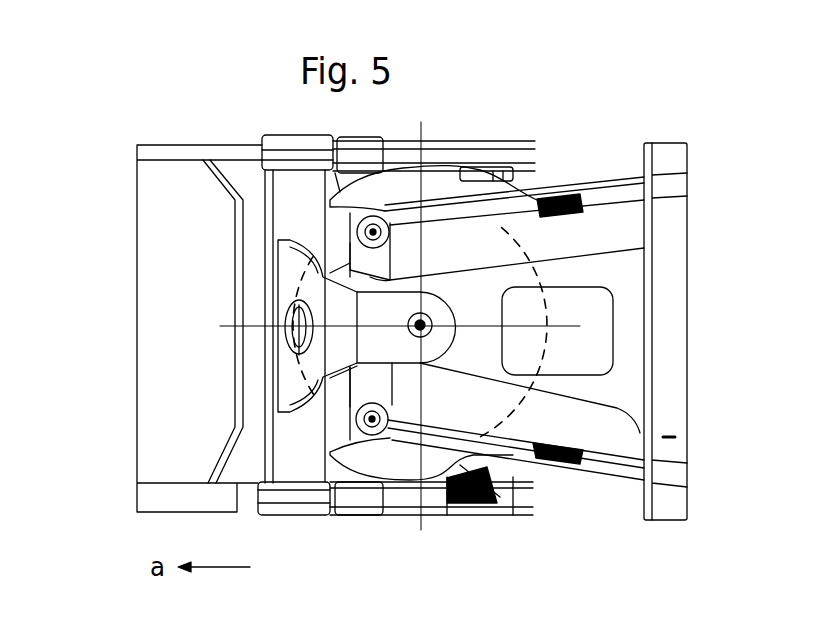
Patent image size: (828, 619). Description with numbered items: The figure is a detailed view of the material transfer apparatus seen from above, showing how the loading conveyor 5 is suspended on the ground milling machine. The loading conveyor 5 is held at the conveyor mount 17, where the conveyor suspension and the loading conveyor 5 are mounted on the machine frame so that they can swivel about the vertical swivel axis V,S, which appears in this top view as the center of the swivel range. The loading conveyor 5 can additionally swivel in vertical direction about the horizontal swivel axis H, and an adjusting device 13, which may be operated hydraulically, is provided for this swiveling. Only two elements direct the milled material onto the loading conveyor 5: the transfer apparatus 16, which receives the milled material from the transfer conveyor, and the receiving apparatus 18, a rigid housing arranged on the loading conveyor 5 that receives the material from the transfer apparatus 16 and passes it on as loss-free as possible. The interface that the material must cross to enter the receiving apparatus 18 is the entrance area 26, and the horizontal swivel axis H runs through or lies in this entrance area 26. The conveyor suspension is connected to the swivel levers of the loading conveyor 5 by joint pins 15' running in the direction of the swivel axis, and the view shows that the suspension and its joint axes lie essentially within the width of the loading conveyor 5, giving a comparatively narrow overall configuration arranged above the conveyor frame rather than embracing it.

The loading conveyor 5 is at (150, 267).
The adjusting device 13 is at (150, 483).
The joint pins 15' is at (395, 532).
The transfer apparatus 16 is at (585, 215).
The conveyor mount 17 is at (401, 362).
The receiving apparatus 18 is at (460, 465).
The entrance area 26 is at (553, 190).
The horizontal swivel axis H is at (421, 122).
The vertical swivel axis V,S is at (420, 327).